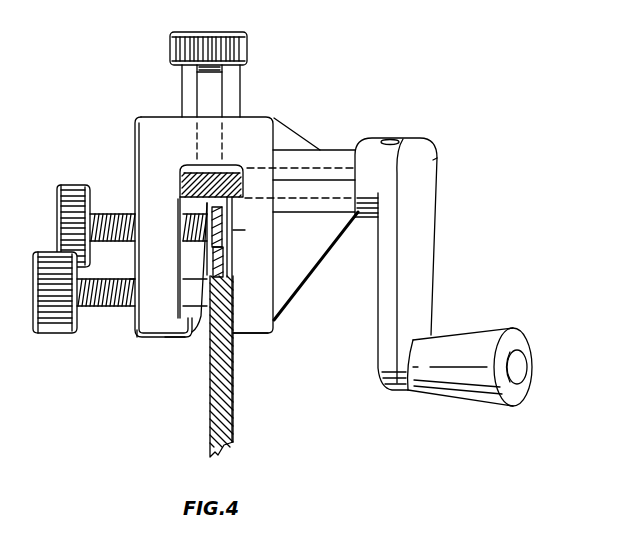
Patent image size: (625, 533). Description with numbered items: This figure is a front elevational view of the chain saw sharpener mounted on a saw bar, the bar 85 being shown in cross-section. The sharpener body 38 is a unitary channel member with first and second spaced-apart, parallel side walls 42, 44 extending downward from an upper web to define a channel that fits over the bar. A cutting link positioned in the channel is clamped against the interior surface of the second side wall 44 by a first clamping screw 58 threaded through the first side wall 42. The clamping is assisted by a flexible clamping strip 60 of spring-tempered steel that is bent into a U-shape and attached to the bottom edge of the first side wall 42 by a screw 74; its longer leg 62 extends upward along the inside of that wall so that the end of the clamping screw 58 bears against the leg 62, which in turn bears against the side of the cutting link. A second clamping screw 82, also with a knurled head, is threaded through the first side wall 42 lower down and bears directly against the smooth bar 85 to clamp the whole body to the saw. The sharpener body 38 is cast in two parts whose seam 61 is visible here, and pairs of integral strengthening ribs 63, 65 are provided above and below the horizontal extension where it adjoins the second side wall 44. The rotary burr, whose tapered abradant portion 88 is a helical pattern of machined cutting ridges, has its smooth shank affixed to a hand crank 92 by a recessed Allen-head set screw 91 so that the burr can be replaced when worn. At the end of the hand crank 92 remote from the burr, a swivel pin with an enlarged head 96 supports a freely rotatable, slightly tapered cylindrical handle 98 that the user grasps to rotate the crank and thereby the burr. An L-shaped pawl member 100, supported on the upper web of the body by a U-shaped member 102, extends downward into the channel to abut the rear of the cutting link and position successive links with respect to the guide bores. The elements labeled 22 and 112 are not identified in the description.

The threaded rod 22 is at (230, 197).
The sharpener body 38 is at (128, 135).
The first side wall 42 is at (167, 318).
The second side wall 44 is at (257, 322).
The first clamping screw 58 is at (107, 212).
The flexible clamping strip 60 is at (137, 338).
The seam 61 is at (263, 183).
The longer leg 62 is at (205, 258).
The strengthening ribs 63 is at (297, 138).
The strengthening ribs 65 is at (308, 252).
The screw 74 is at (123, 303).
The second clamping screw 82 is at (90, 304).
The bar 85 is at (225, 408).
The tapered abradant portion 88 is at (192, 175).
The set screw 91 is at (393, 138).
The hand crank 92 is at (425, 288).
The enlarged head 96 is at (520, 365).
The handle 98 is at (457, 383).
The pawl member 100 is at (212, 100).
The U-shaped member 102 is at (181, 88).
The adjusting knob 112 is at (243, 45).